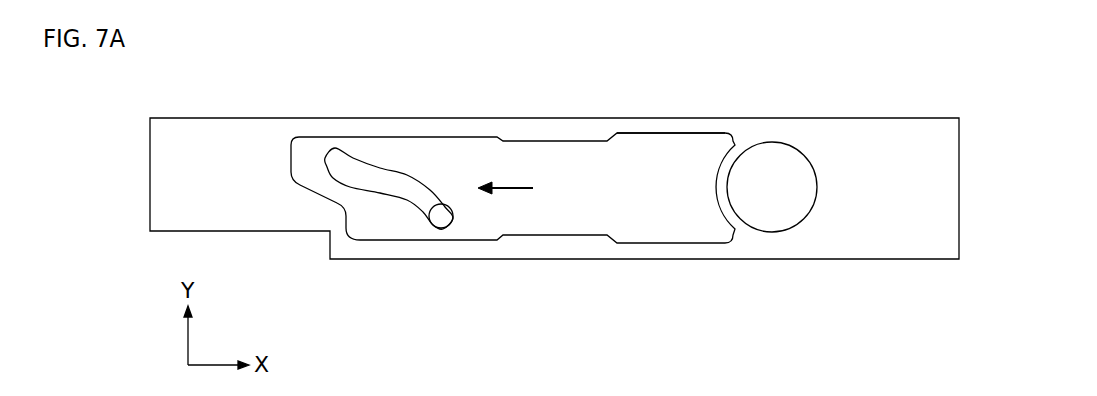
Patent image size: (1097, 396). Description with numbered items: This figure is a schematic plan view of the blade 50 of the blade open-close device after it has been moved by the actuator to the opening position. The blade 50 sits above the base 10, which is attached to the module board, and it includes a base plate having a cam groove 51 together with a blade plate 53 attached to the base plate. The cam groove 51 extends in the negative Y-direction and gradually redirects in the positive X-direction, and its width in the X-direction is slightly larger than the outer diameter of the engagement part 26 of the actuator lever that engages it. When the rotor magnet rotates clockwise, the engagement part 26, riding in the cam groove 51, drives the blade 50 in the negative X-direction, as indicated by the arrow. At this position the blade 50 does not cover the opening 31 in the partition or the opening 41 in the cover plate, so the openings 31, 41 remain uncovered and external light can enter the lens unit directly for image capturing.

The base 10 is at (557, 259).
The engagement part 26 is at (442, 216).
The opening 31 is at (779, 230).
The opening 41 is at (800, 227).
The blade 50 is at (552, 141).
The cam groove 51 is at (381, 186).
The blade plate 53 is at (663, 155).